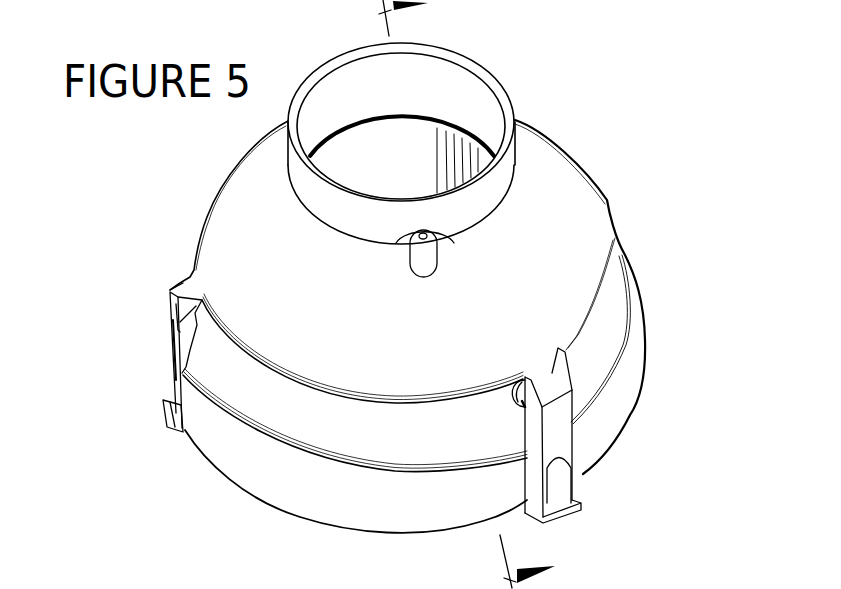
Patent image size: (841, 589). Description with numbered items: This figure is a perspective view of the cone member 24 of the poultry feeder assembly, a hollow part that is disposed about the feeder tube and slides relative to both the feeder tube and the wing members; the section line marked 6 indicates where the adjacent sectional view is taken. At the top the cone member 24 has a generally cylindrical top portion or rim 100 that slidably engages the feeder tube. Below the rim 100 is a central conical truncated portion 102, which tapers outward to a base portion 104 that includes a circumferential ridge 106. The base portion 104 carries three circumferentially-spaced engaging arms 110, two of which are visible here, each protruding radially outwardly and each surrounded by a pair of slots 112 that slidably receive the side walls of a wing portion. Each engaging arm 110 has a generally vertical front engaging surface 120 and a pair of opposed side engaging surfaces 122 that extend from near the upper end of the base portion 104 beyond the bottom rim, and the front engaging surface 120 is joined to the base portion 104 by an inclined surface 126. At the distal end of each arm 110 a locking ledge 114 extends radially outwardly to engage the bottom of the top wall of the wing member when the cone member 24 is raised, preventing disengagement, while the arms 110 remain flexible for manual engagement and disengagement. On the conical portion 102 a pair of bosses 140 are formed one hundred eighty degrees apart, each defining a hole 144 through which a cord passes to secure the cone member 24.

The section line 6- 6 is at (457, 294).
The cone member 24 is at (588, 138).
The top portion or rim 100 is at (497, 80).
The central conical truncated portion 102 is at (541, 240).
The base portion 104 is at (617, 310).
The circumferential ridge 106 is at (634, 373).
The engaging arm 110 is at (173, 323).
The slot 112 is at (198, 350).
The locking ledge 114 is at (180, 437).
The front engaging surface 120 is at (176, 337).
The side engaging surface 122 is at (187, 331).
The inclined surface 126 is at (185, 293).
The boss 140 is at (433, 258).
The hole 144 is at (423, 231).